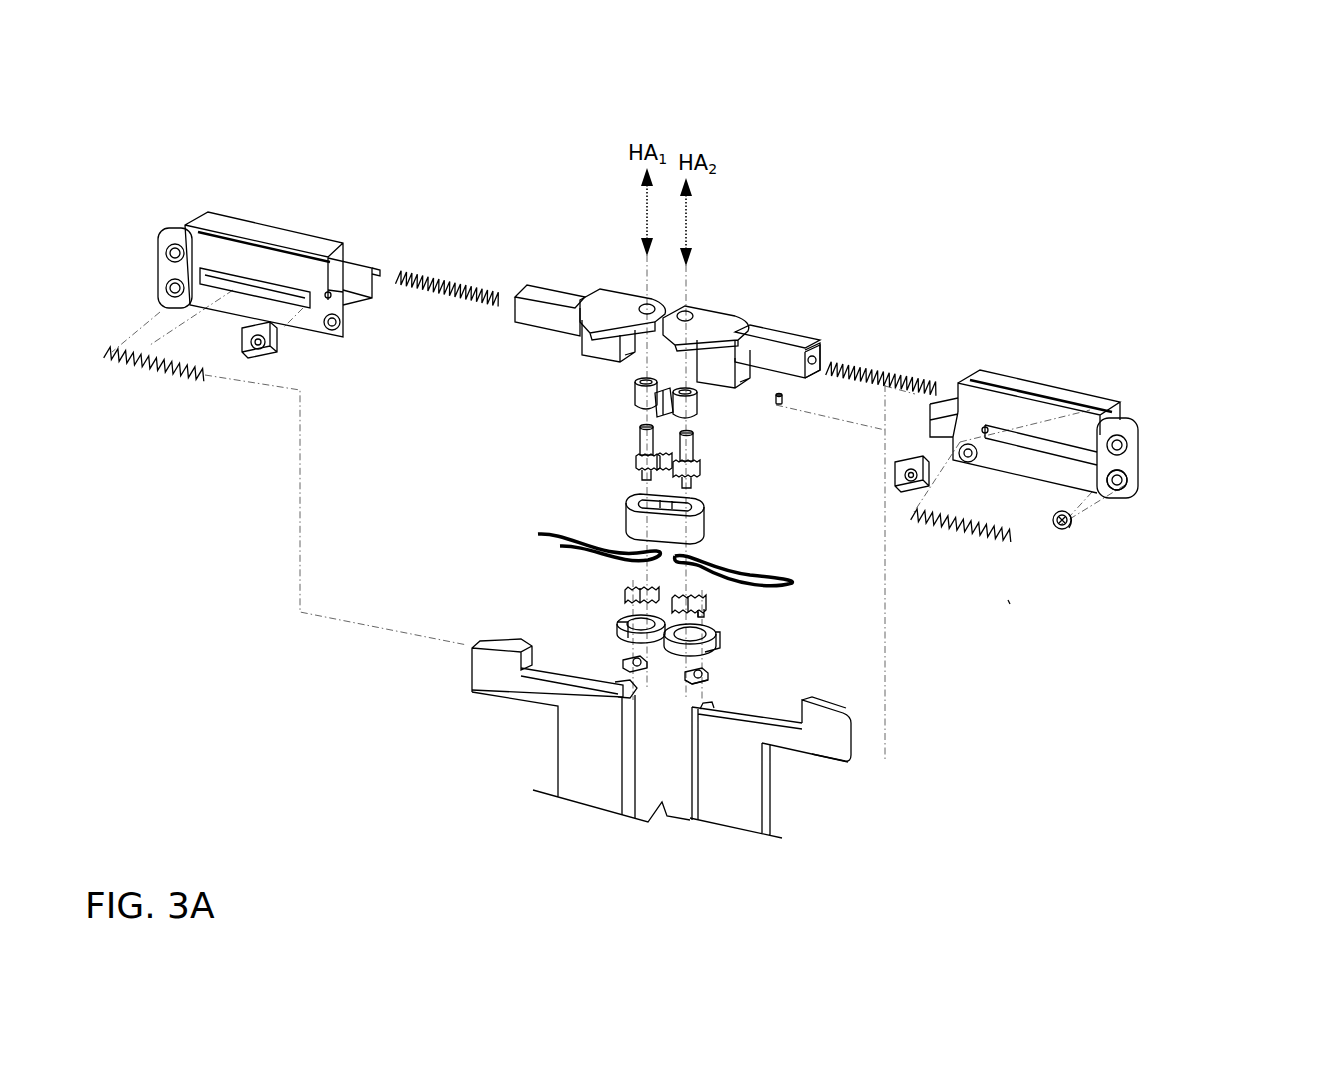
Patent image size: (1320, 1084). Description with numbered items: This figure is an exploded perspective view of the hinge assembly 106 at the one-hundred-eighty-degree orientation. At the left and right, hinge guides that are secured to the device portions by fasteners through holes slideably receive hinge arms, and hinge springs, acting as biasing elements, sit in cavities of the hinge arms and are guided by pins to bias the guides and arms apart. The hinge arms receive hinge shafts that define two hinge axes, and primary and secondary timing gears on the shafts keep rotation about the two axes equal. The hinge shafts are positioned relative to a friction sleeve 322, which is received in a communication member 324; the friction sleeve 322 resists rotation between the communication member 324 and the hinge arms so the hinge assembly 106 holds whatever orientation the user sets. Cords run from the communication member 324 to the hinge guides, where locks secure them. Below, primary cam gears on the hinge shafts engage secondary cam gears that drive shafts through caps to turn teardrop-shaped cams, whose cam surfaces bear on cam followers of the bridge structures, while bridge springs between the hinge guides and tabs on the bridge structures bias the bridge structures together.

The hinge assembly 106 is at (826, 140).
The friction sleeve 322 is at (634, 395).
The communication member 324 is at (665, 519).